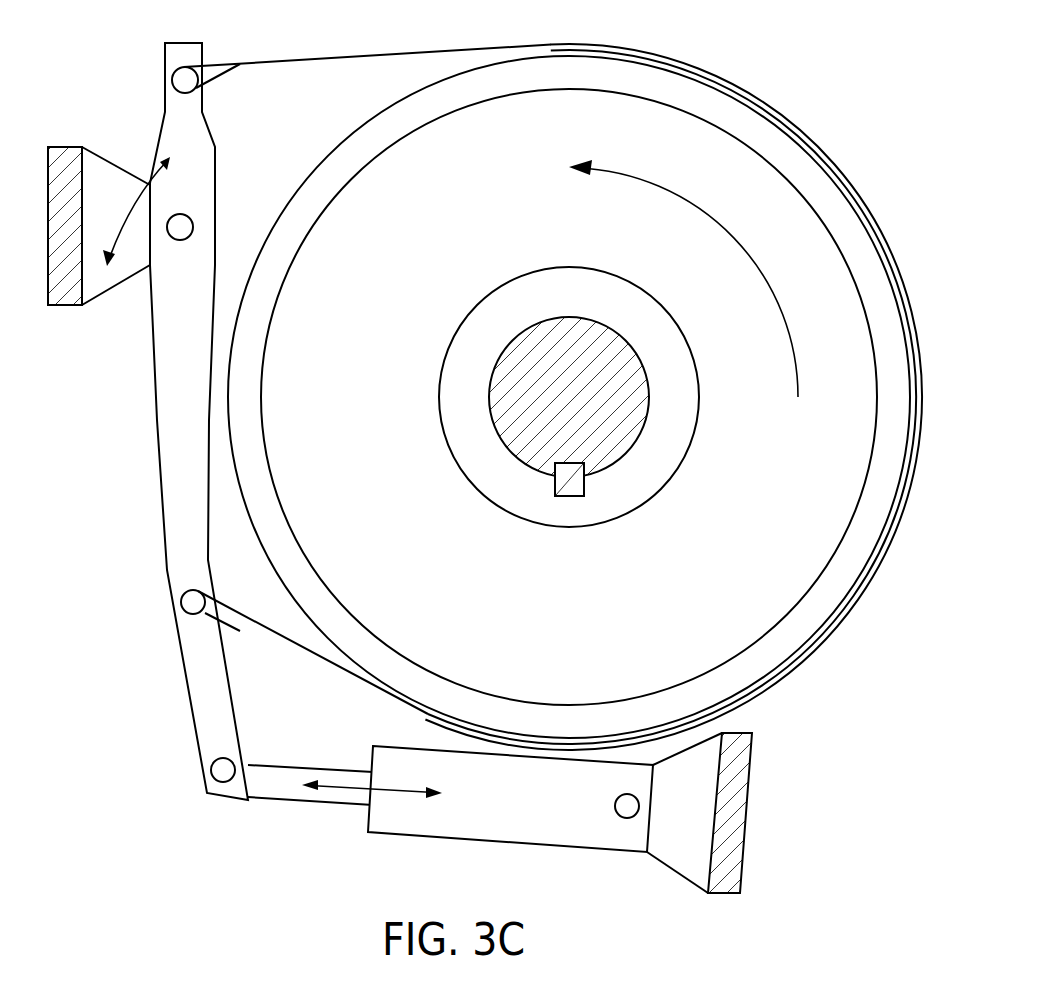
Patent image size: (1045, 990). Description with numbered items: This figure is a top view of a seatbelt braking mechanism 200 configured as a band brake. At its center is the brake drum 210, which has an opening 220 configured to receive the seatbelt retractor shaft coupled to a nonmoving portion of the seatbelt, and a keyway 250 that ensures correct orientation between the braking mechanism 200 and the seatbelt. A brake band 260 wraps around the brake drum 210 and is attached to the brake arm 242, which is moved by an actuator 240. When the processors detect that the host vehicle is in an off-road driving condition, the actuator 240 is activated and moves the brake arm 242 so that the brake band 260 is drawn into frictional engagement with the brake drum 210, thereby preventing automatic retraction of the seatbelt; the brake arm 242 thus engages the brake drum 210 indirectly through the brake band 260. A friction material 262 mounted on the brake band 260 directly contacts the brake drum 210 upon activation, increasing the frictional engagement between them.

The seatbelt braking mechanism 200 is at (853, 788).
The brake drum 210 is at (337, 147).
The opening 220 is at (648, 423).
The actuator 240 is at (278, 799).
The brake arm 242 is at (157, 462).
The keyway 250 is at (575, 497).
The brake band 260 is at (320, 58).
The friction material 262 is at (663, 54).